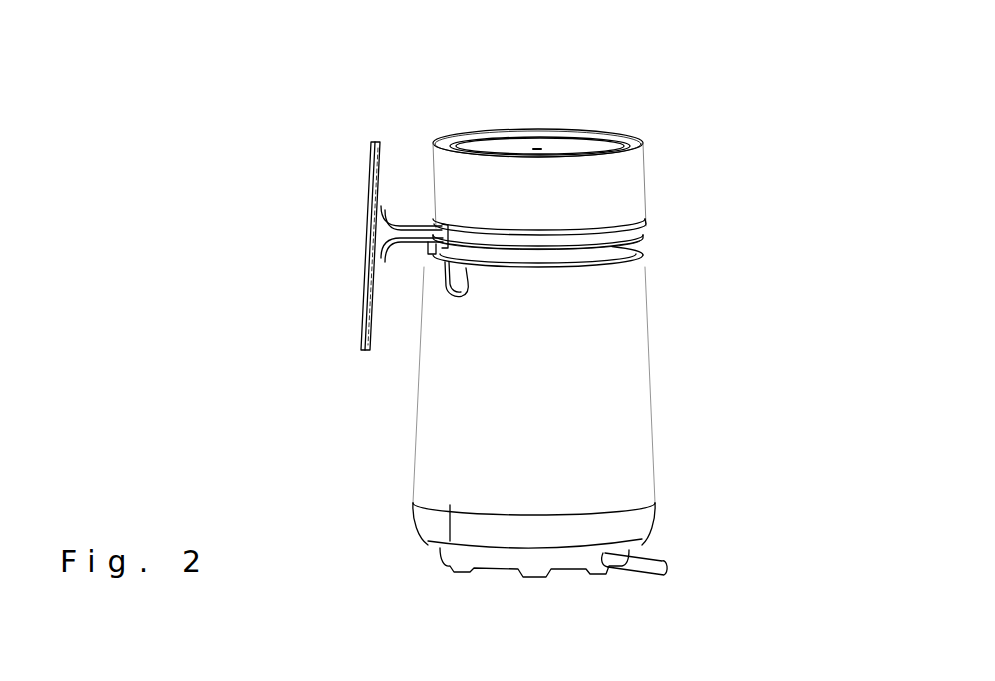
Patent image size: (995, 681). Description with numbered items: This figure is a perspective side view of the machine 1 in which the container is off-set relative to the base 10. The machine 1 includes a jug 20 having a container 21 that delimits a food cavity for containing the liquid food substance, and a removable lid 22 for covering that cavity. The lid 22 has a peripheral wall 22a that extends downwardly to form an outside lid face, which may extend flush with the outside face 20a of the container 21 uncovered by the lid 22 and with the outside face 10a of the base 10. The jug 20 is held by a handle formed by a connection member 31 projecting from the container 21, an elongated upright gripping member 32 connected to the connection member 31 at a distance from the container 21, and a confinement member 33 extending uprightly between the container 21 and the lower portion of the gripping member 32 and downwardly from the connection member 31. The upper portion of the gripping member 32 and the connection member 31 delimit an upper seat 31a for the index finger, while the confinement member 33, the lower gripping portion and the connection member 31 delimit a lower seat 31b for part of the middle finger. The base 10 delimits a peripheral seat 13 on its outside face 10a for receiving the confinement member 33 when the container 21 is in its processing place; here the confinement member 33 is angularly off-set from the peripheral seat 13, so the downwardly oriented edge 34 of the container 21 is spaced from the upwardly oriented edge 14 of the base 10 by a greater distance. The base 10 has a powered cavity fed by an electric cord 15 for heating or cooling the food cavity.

The machine 1 is at (205, 84).
The base 10 is at (410, 501).
The outside face of base 10a is at (590, 470).
The peripheral seat 13 is at (455, 296).
The upwardly oriented edge of base 14 is at (633, 264).
The electric cord 15 is at (648, 560).
The jug 20 is at (616, 245).
The outside face of container 20a is at (545, 237).
The container 21 is at (574, 257).
The removable lid 22 is at (510, 157).
The peripheral wall of lid 22a is at (613, 172).
The connection member 31 is at (410, 224).
The upper seat 31a is at (397, 180).
The lower seat 31b is at (392, 272).
The gripping member 32 is at (372, 236).
The confinement member 33 is at (426, 250).
The downwardly oriented edge of container 34 is at (519, 249).